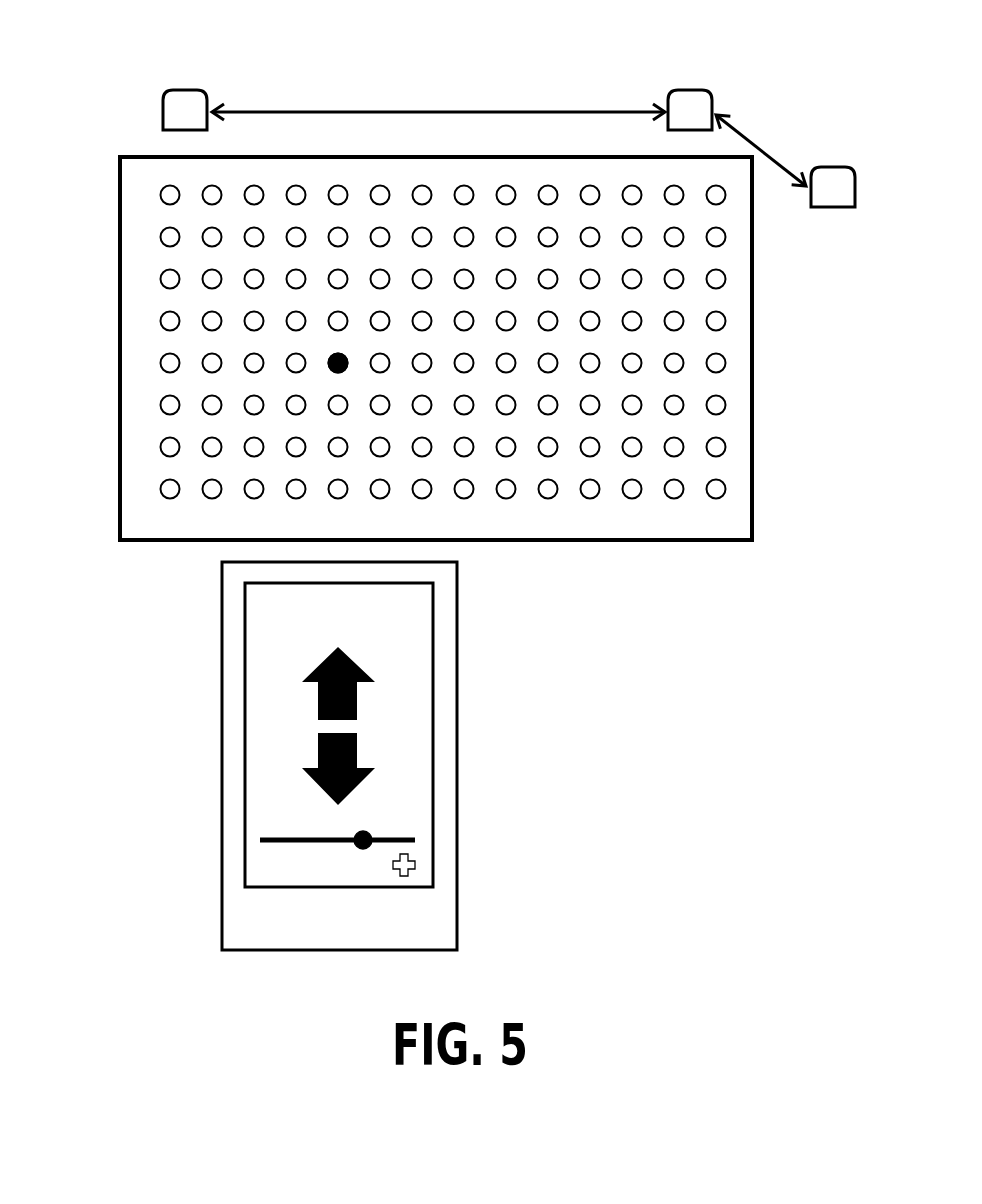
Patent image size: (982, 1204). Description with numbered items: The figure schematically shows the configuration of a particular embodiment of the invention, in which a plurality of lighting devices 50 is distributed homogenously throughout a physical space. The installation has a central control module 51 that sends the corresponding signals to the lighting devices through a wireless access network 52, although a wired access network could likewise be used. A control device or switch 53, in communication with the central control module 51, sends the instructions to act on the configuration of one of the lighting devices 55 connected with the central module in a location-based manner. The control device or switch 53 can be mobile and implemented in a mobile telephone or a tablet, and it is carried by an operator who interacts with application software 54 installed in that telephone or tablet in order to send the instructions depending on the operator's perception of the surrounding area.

The plurality of lighting devices 50 is at (135, 200).
The central control module 51 is at (832, 187).
The wireless access network 52 is at (185, 110).
The control device or switch 53 is at (690, 108).
The application software 54 is at (268, 712).
The lighting device 55 is at (330, 367).